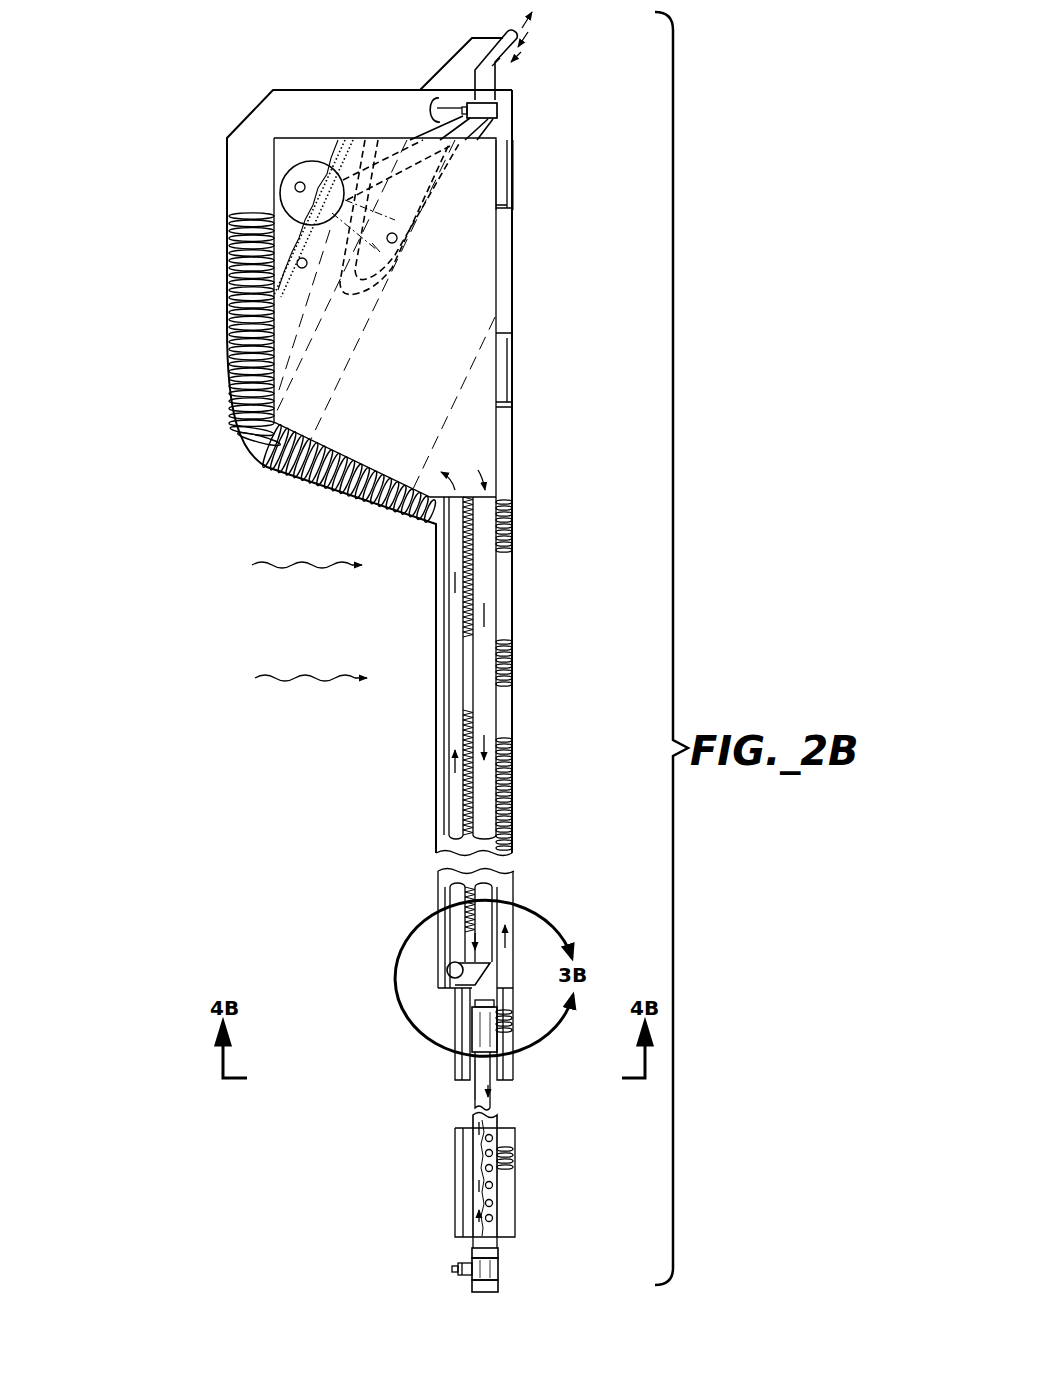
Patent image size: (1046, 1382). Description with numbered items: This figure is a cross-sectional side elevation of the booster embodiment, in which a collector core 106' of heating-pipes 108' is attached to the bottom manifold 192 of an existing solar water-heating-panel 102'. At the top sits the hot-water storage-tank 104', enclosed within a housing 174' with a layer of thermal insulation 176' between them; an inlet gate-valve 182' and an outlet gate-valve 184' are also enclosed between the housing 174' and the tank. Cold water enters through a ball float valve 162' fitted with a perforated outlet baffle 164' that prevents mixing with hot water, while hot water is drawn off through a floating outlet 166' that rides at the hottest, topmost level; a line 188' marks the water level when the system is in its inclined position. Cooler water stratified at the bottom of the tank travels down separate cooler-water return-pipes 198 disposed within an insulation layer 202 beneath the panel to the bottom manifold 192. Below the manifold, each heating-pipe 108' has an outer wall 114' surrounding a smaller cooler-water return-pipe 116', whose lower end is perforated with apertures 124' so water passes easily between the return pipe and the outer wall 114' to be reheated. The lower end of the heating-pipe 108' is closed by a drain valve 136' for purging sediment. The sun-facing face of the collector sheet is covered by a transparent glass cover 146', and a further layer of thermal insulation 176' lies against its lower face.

The existing solar water-heating-panel 102' is at (407, 443).
The hot-water storage-tank 104' is at (528, 194).
The collector core 106' is at (529, 1036).
The heating-pipe 108' is at (449, 1175).
The outer wall 114' is at (432, 1080).
The cooler-water return-pipe 116' is at (524, 1087).
The apertures 124' is at (532, 1178).
The drain valve 136' is at (518, 1264).
The transparent glass cover 146' is at (445, 867).
The ball float valve 162' is at (259, 167).
The perforated outlet baffle 164' is at (331, 180).
The floating outlet 166' is at (378, 236).
The housing 174' is at (284, 368).
The layer of thermal insulation 176' is at (368, 664).
The inlet gate-valve 182' is at (524, 121).
The outlet gate-valve 184' is at (482, 110).
The line 188' is at (335, 187).
The bottom manifold 192 is at (452, 979).
The cooler-water return-pipes 198 is at (488, 588).
The insulation layer 202 is at (497, 637).